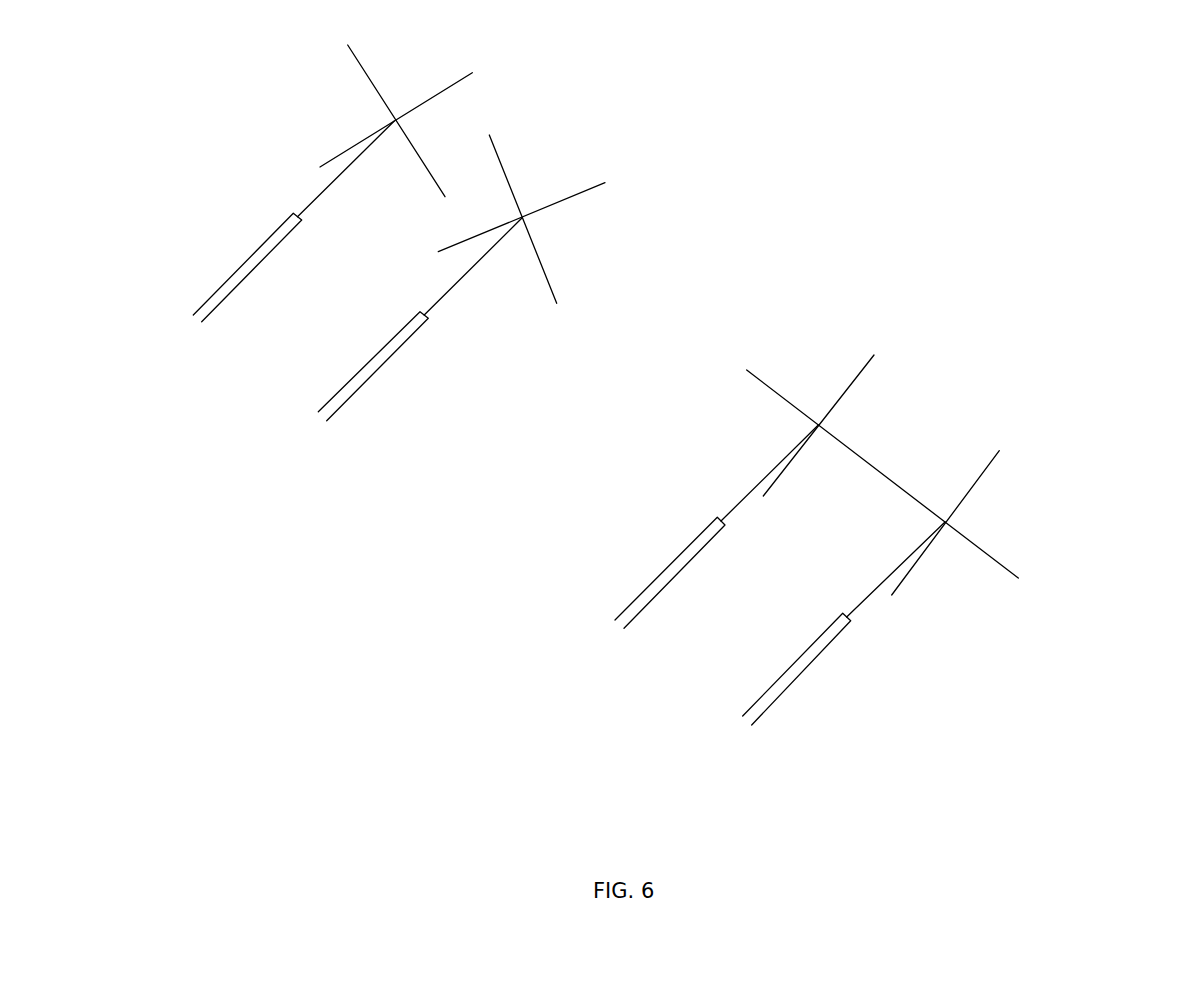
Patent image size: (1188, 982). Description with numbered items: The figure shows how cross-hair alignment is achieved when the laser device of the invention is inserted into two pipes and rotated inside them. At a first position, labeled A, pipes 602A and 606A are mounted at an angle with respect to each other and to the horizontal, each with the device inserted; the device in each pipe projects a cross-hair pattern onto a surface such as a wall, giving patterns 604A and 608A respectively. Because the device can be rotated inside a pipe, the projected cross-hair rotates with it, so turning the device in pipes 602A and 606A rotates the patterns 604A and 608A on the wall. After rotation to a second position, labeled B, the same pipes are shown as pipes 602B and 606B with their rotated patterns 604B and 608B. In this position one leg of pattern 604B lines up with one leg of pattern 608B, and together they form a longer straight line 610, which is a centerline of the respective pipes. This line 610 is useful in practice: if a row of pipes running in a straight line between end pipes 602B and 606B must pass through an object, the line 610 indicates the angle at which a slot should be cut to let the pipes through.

The pipe 602A is at (293, 221).
The pattern 604A is at (396, 121).
The pipe 606A is at (419, 319).
The pattern 608A is at (521, 219).
The pipe 602B is at (716, 526).
The pattern 604B is at (846, 437).
The pipe 606B is at (844, 623).
The pattern 608B is at (946, 519).
The straight line 610 is at (1034, 579).